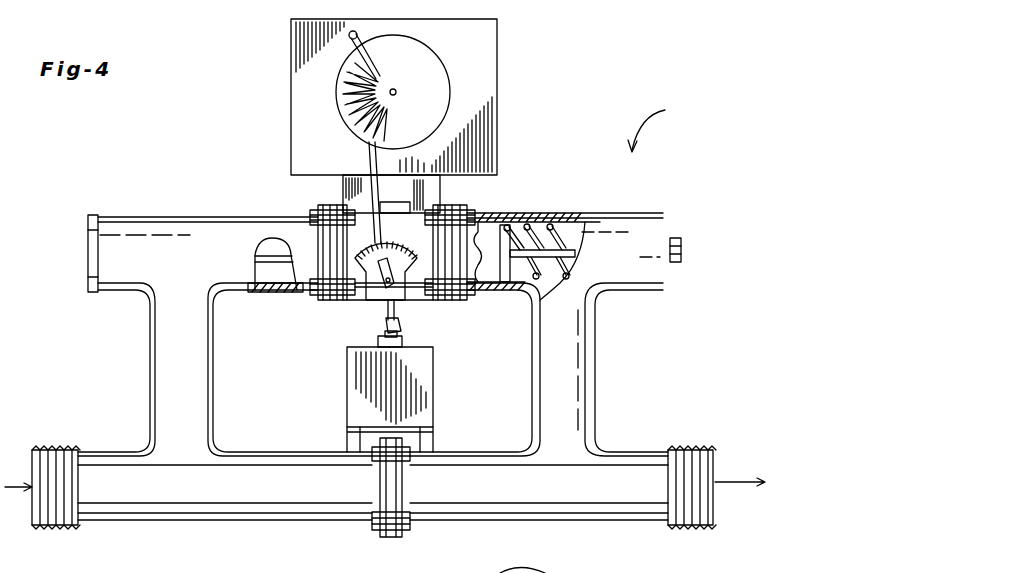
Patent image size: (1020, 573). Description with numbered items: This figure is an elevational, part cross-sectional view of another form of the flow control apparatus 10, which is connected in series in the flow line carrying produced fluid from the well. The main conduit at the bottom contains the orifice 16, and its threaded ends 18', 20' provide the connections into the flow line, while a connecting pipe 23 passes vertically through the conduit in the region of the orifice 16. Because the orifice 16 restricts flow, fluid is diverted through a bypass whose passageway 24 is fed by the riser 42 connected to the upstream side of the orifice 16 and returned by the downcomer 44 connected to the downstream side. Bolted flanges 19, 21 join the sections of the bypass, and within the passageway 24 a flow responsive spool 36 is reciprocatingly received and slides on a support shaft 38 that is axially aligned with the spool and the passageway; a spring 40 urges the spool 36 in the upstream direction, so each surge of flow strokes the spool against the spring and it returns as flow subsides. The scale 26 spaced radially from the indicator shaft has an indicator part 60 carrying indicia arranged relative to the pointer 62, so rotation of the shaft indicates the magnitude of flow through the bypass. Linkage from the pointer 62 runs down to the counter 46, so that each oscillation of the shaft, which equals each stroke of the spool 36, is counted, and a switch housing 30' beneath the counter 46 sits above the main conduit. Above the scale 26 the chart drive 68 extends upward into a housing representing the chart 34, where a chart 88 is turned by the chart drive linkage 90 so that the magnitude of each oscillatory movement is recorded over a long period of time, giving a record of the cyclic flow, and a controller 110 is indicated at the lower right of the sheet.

The flow control apparatus 10 is at (667, 110).
The chart 34 is at (512, 138).
The chart 88 is at (425, 75).
The chart drive linkage 90 is at (345, 48).
The chart drive 68 is at (368, 160).
The scale 26 is at (392, 212).
The left flange 19 is at (310, 208).
The right flange 21 is at (470, 210).
The indicator part 60 is at (422, 262).
The pointer 62 is at (378, 292).
The counter 46 is at (405, 340).
The spool 36 is at (484, 300).
The spring 40 is at (560, 225).
The support shaft 38 is at (262, 244).
The passageway 24 is at (272, 290).
The riser 42 is at (212, 386).
The downcomer 44 is at (548, 362).
The inlet threaded end 18' is at (67, 469).
The outlet threaded end 20' is at (689, 469).
The actuator housing 30' is at (369, 399).
The connecting pipe 23 is at (405, 500).
The orifice 16 is at (392, 538).
The controller 110 is at (855, 572).